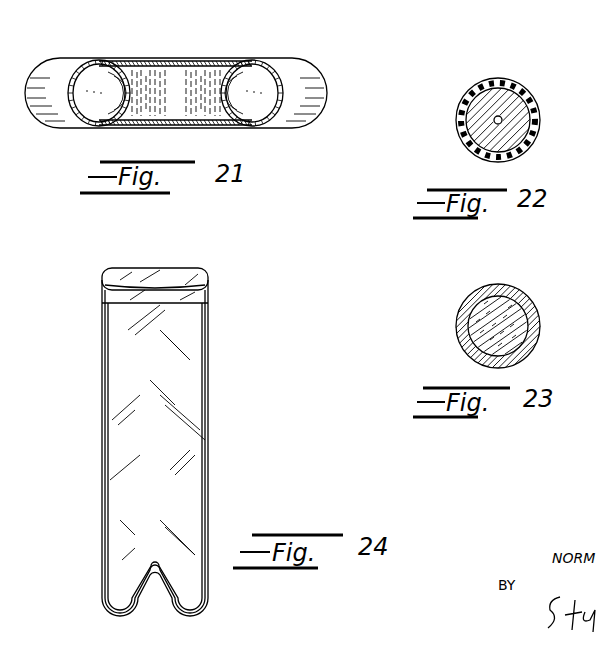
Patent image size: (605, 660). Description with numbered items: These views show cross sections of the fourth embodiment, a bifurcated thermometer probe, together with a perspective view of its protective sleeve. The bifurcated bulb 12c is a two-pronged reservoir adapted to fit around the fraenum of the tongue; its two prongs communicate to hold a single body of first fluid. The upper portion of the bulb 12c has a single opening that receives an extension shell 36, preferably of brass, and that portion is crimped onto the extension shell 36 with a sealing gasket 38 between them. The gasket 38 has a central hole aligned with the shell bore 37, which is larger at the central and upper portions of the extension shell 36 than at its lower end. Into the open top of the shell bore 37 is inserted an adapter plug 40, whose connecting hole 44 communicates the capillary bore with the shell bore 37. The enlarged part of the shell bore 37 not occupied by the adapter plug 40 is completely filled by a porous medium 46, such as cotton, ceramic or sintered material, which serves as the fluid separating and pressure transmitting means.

In FIG. 21, the bifurcated bulb 12c is at (62, 62).
In FIG. 24, the bifurcated bulb 12c is at (155, 442).
In FIG. 22, the extension shell 36 is at (507, 85).
In FIG. 23, the extension shell 36 is at (477, 296).
In FIG. 22, the shell bore 37 is at (503, 120).
In FIG. 22, the sealing gasket 38 is at (533, 102).
In FIG. 23, the adapter plug 40 is at (532, 296).
In FIG. 23, the connecting hole 44 is at (543, 318).
In FIG. 23, the porous medium 46 is at (503, 294).